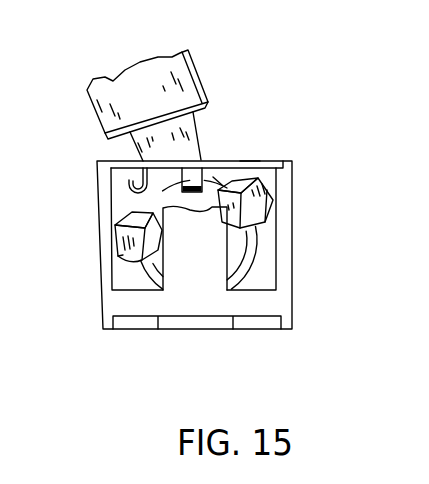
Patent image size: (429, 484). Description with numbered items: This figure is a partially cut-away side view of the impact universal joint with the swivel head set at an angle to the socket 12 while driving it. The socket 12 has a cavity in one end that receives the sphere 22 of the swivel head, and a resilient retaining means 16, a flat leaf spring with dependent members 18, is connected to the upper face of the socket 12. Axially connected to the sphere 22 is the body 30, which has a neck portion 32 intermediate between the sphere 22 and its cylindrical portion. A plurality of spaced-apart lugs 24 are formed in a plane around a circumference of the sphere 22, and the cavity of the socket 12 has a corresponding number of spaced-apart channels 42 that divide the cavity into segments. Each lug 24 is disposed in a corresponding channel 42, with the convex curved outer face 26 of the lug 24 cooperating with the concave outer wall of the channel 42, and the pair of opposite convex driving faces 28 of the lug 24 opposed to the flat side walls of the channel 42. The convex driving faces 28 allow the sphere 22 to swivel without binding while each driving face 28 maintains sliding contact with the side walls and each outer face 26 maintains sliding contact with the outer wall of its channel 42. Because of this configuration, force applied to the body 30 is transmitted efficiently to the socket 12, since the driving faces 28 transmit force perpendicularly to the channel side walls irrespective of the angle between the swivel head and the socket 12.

The socket 12 is at (292, 250).
The resilient retaining means 16 is at (250, 160).
The dependent members 18 is at (178, 180).
The sphere 22 is at (213, 177).
The lugs 24 is at (118, 247).
The outer face 26 is at (123, 255).
The driving faces 28 is at (247, 179).
The body 30 is at (110, 80).
The neck portion 32 is at (133, 157).
The channels 42 is at (207, 262).